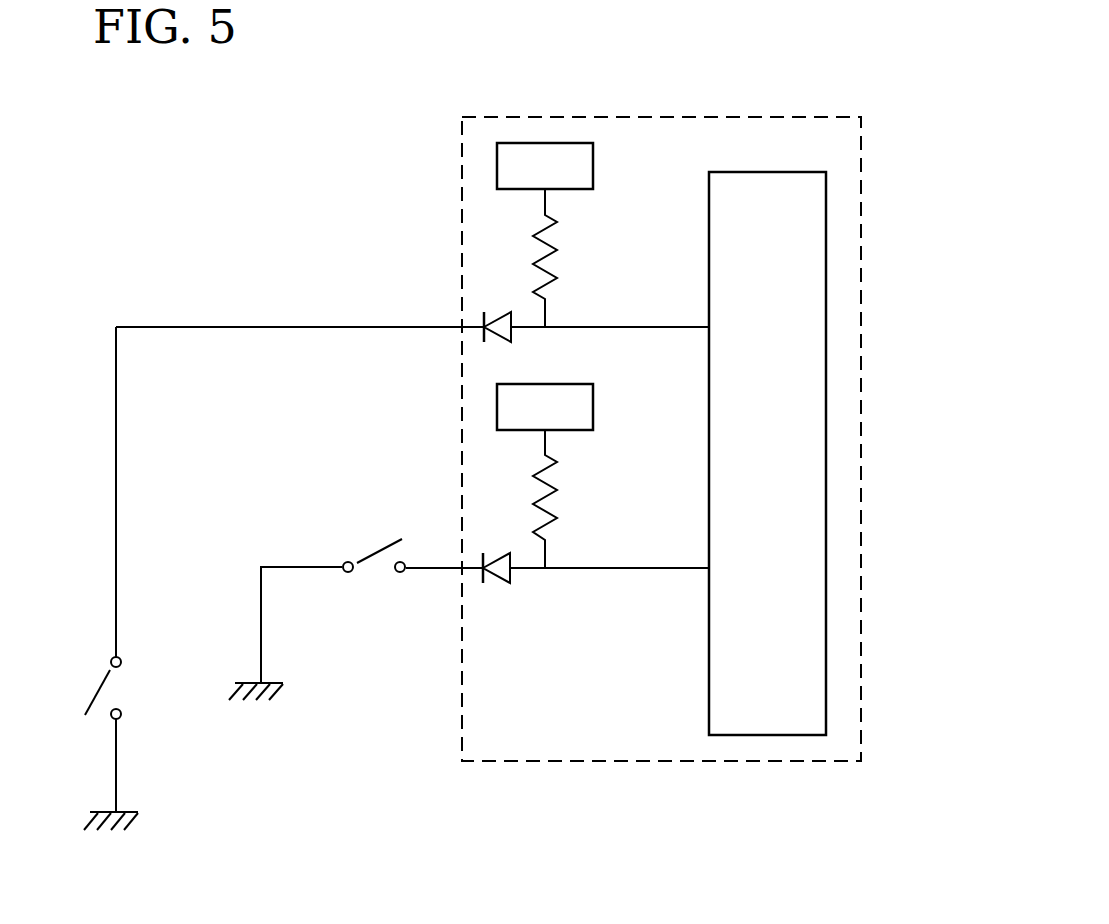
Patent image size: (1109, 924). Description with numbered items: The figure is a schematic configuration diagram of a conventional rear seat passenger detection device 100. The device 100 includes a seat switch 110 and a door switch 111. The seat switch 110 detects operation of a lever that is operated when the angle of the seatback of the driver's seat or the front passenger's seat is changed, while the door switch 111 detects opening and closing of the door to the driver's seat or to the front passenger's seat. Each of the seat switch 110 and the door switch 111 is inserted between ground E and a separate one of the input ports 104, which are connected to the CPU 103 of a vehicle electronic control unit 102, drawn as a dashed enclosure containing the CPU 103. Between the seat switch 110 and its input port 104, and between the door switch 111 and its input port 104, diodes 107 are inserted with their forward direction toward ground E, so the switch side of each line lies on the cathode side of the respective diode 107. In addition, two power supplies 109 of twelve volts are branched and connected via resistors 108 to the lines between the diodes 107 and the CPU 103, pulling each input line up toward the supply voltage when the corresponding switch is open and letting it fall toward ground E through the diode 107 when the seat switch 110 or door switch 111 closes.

The rear seat passenger detection device 100 is at (300, 215).
The vehicle electronic control unit 102 is at (692, 116).
The CPU 103 is at (826, 610).
The input port 104 is at (475, 326).
The diode 107 is at (498, 312).
The resistor 108 is at (556, 252).
The power supply (+12 V) 109 is at (593, 160).
The seat switch 110 is at (378, 552).
The door switch 111 is at (100, 692).
The ground E is at (274, 682).